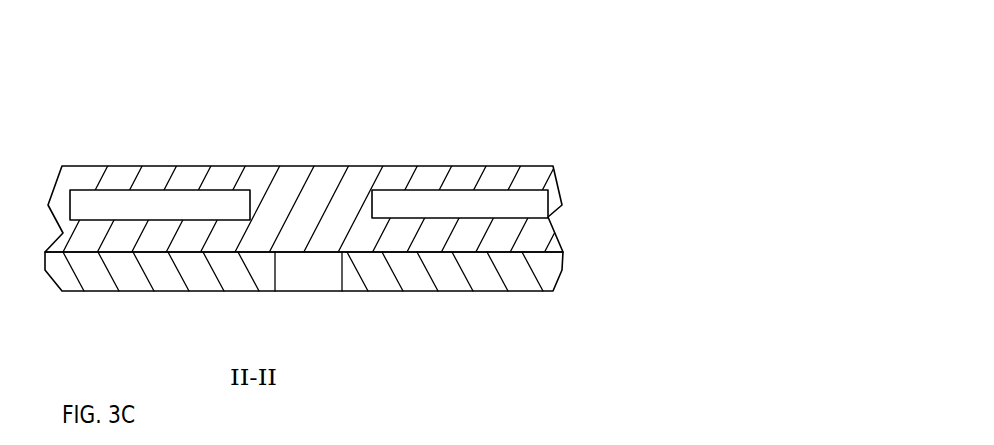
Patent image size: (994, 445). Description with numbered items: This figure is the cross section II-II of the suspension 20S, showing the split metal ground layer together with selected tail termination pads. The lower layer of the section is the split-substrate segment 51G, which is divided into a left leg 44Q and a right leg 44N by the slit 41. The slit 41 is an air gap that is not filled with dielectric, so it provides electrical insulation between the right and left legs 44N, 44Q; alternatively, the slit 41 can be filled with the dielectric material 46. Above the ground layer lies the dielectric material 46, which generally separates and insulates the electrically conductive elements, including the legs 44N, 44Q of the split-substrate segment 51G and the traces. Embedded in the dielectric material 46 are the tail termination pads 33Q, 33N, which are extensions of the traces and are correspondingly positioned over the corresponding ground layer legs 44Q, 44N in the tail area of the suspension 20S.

The suspension 20S is at (431, 195).
The tail termination pad 33Q is at (148, 200).
The tail termination pad 33N is at (420, 198).
The dielectric material 46 is at (293, 177).
The slit 41 is at (307, 293).
The left leg 44Q is at (95, 285).
The right leg 44N is at (523, 278).
The split-substrate segment 51G is at (431, 308).